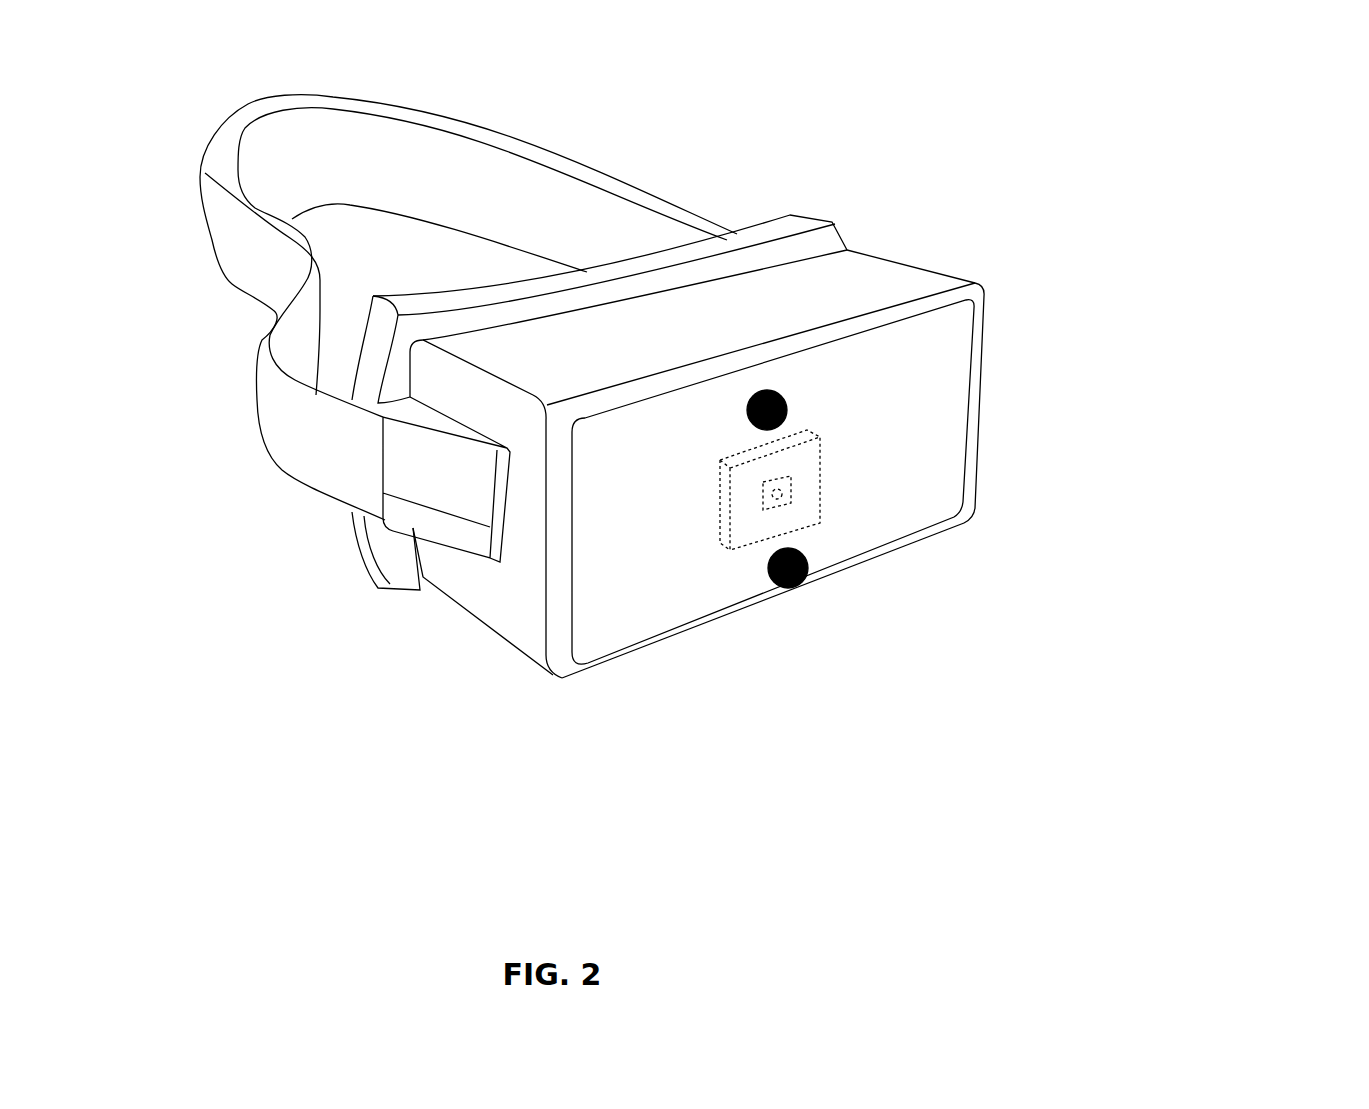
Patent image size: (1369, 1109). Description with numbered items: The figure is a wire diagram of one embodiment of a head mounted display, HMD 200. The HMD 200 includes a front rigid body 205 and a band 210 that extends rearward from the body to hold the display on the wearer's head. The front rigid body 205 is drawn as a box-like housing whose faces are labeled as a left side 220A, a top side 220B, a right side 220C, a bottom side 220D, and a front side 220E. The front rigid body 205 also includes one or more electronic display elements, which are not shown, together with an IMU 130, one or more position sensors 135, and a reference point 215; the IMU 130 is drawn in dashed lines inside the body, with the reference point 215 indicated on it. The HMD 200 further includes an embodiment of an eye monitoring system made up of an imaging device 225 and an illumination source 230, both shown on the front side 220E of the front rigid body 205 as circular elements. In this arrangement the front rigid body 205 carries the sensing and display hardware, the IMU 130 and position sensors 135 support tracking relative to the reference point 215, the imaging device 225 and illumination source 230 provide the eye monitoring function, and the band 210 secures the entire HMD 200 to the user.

The head mounted display (HMD) 200 is at (128, 89).
The front rigid body 205 is at (707, 468).
The band 210 is at (597, 172).
The reference point 215 is at (792, 504).
The left side 220A is at (940, 267).
The top side 220B is at (513, 344).
The right side 220C is at (513, 590).
The bottom side 220D is at (462, 637).
The front side 220E is at (613, 637).
The imaging device 225 is at (809, 584).
The illumination source 230 is at (790, 395).
The IMU 130 is at (823, 506).
The position sensors 135 is at (990, 564).